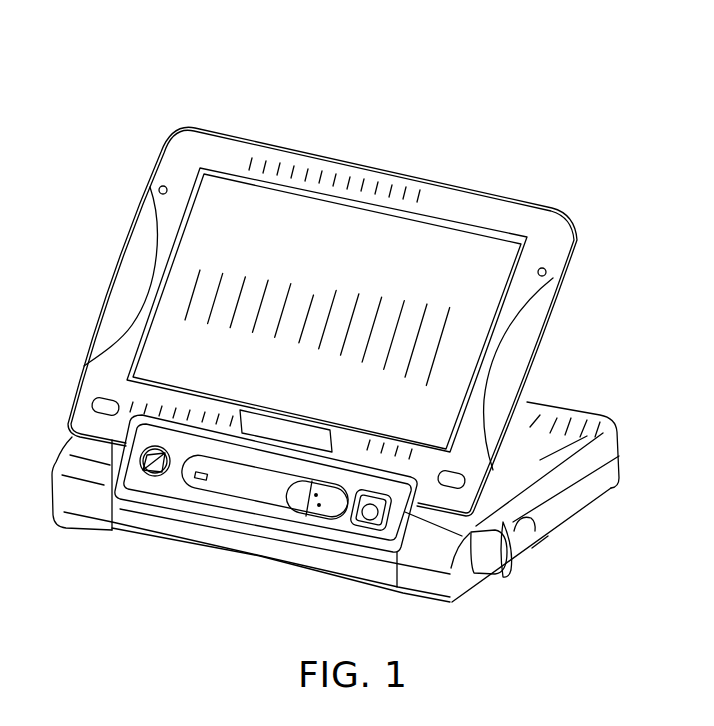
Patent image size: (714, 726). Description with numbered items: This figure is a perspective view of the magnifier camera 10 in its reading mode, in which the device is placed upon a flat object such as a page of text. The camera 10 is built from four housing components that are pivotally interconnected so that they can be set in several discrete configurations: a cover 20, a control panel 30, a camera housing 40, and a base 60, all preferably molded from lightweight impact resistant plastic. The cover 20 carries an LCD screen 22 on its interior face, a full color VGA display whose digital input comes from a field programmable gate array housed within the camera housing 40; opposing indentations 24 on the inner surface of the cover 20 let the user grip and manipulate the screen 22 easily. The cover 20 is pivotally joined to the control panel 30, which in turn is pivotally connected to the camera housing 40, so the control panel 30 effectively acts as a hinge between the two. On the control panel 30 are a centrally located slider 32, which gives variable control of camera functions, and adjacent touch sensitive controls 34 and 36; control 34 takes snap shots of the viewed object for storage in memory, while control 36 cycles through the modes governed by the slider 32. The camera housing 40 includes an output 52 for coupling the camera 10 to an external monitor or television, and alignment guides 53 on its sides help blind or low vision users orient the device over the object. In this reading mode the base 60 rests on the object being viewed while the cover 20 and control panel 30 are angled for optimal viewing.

The camera 10 is at (418, 143).
The cover 20 is at (450, 208).
The LCD screen 22 is at (331, 294).
The opposing indentations 24 is at (133, 262).
The control panel 30 is at (236, 518).
The slider 32 is at (322, 508).
The touch sensitive control 34 is at (370, 522).
The touch sensitive control 36 is at (153, 477).
The camera housing 40 is at (578, 438).
The output 52 is at (483, 535).
The alignment guides 53 is at (507, 560).
The base 60 is at (540, 542).